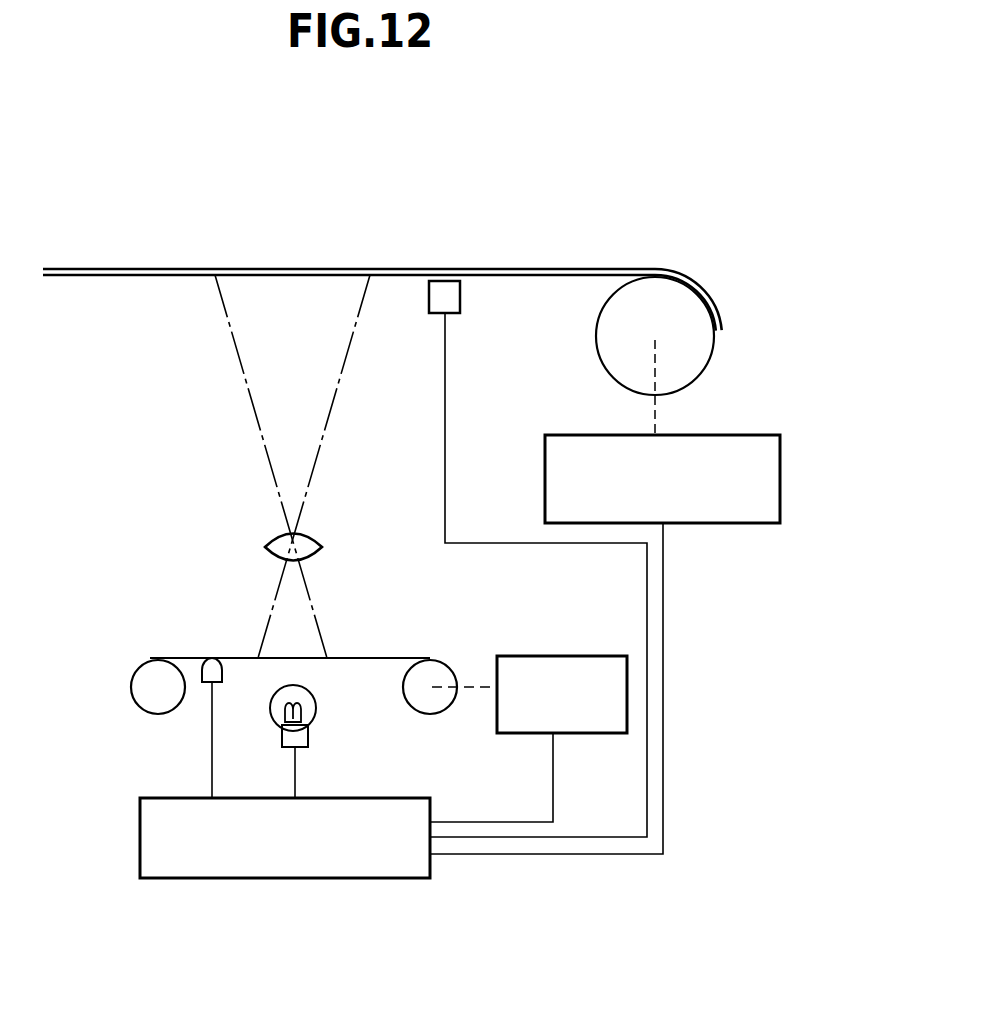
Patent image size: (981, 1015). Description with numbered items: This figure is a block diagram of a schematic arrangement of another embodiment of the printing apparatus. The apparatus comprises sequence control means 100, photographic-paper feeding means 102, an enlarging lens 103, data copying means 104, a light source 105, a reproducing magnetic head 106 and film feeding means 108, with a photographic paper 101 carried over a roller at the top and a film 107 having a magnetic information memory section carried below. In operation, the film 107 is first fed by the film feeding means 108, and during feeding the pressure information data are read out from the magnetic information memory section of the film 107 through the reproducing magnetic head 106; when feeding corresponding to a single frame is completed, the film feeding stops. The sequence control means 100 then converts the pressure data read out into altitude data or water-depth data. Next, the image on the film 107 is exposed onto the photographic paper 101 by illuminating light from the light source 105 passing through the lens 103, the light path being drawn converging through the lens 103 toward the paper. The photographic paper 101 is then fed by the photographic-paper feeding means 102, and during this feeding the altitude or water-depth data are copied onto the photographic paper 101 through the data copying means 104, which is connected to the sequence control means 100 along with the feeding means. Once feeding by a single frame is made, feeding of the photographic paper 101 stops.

The sequence control means 100 is at (350, 878).
The photographic paper 101 is at (562, 268).
The photographic-paper feeding means 102 is at (738, 435).
The enlarging lens 103 is at (322, 541).
The data copying means 104 is at (460, 300).
The light source 105 is at (270, 712).
The reproducing magnetic head 106 is at (203, 685).
The film 107 is at (425, 658).
The film feeding means 108 is at (567, 656).